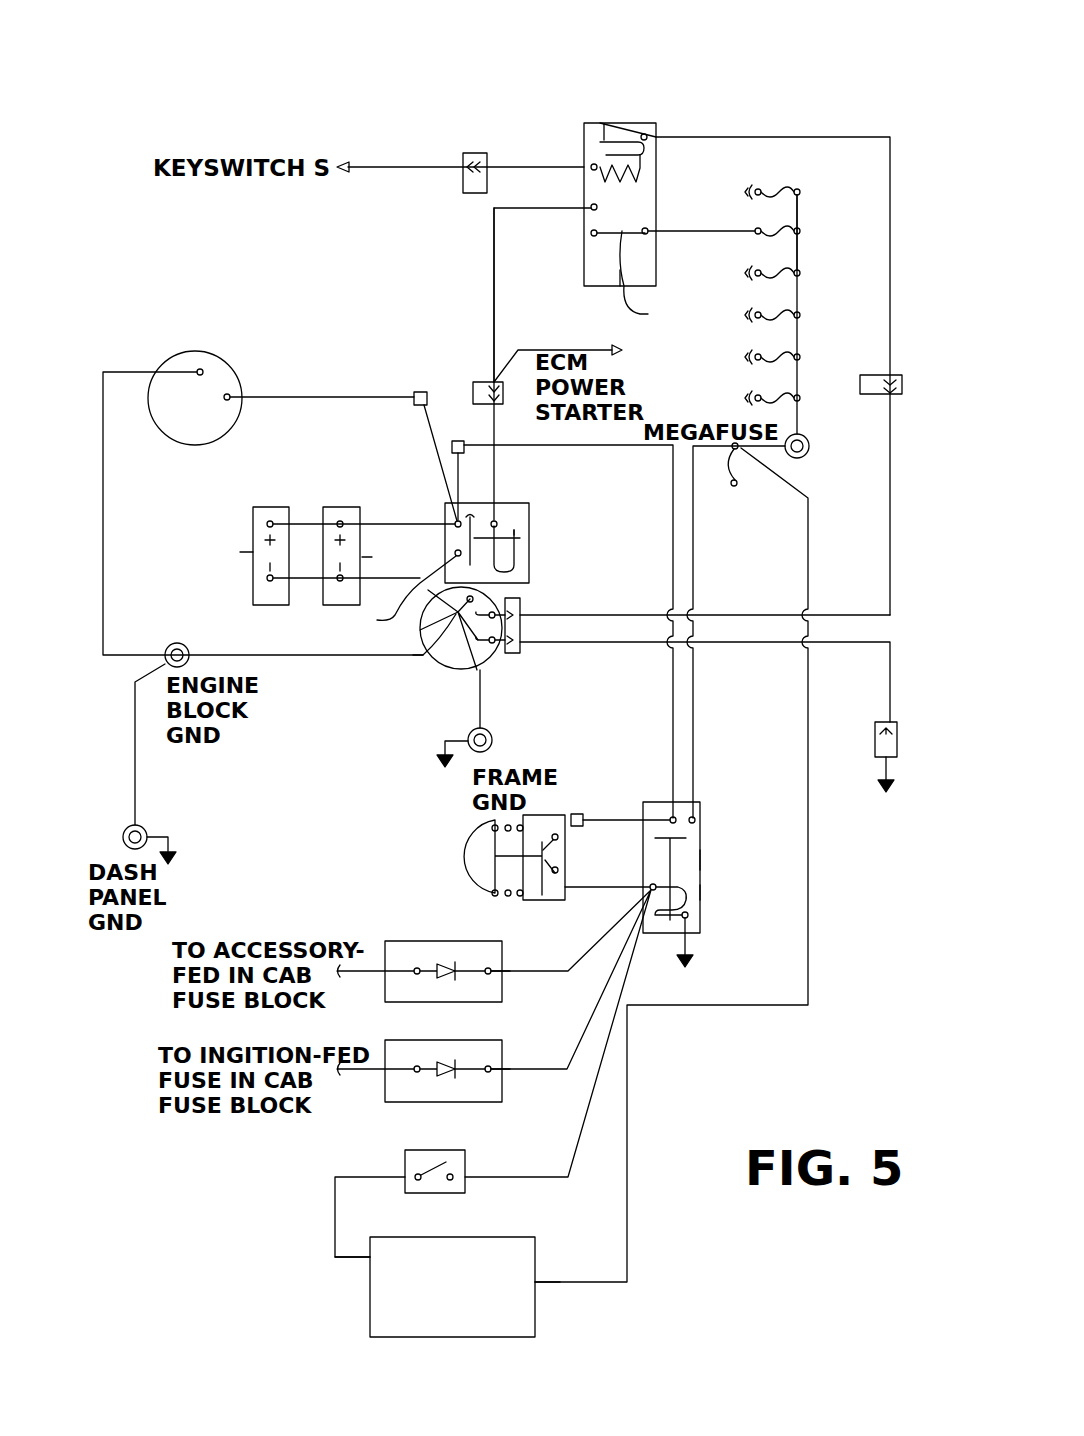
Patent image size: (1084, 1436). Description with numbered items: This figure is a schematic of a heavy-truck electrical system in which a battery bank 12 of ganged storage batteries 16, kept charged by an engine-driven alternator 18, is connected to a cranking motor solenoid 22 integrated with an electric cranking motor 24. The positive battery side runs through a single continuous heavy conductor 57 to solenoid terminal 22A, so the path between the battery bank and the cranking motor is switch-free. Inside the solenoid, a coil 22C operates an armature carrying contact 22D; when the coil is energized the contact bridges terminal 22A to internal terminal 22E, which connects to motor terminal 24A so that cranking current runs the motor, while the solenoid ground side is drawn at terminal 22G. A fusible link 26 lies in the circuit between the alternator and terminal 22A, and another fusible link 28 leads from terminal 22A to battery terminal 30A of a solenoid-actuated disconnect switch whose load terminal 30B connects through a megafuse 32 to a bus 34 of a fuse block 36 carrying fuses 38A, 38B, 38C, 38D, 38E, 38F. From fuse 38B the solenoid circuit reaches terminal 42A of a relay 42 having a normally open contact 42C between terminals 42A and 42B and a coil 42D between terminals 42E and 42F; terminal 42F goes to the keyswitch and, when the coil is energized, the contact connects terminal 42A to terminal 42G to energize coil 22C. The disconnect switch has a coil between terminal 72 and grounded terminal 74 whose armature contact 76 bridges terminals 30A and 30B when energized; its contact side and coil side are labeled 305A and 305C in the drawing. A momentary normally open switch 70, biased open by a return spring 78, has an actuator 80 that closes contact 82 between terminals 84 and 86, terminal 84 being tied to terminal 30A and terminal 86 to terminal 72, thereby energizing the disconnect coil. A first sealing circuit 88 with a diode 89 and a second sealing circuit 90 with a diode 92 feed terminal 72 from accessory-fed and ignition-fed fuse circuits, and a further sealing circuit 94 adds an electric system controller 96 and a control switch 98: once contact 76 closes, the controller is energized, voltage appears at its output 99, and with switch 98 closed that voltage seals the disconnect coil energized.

The relay 42 is at (703, 70).
The relay terminal 42A is at (648, 229).
The relay terminal 42B is at (594, 236).
The normally open contact 42C is at (661, 298).
The relay coil 42D is at (604, 124).
The relay coil terminal 42E is at (648, 136).
The relay coil terminal 42F is at (592, 165).
The relay terminal 42G is at (591, 207).
The fuse block 36 is at (764, 180).
The fuse 38A is at (801, 187).
The fuse 38B is at (801, 226).
The fuse 38C is at (804, 280).
The fuse 38D is at (804, 322).
The fuse 38E is at (801, 360).
The fuse 38F is at (801, 402).
The bus 34 is at (800, 270).
The megafuse 32 is at (738, 449).
The alternator 18 is at (195, 385).
The fusible link 26 is at (447, 503).
The fusible link 28 is at (445, 503).
The cranking motor solenoid 22 is at (552, 571).
The solenoid terminal 22A is at (455, 522).
The solenoid coil 22C is at (514, 528).
The solenoid contact 22D is at (428, 450).
The internal solenoid terminal 22E is at (392, 592).
The solenoid terminal 22G is at (423, 655).
The continuous heavy conductor 57 is at (453, 528).
The battery bank 12 is at (266, 542).
The storage batteries 16 is at (253, 552).
The cranking motor 24 is at (455, 668).
The motor terminal 24A is at (515, 598).
The actuator 80 is at (468, 857).
The switch terminal 84 is at (578, 814).
The switch terminal 86 is at (562, 875).
The switch contact 82 is at (537, 903).
The normally open switch 70 is at (500, 900).
The return spring 78 is at (510, 898).
The battery terminal 30A is at (655, 803).
The load terminal 30B is at (698, 803).
The contact 76 is at (703, 828).
The coil terminal 72 is at (649, 885).
The coil terminal 74 is at (705, 925).
The relay contact 305A is at (703, 860).
The relay contact 305C is at (703, 892).
The first sealing circuit 88 is at (382, 941).
The diode 89 is at (480, 1003).
The second sealing circuit 90 is at (405, 1040).
The diode 92 is at (470, 1102).
The control switch 98 is at (411, 1150).
The further sealing circuit 94 is at (357, 1282).
The controller output 99 is at (368, 1250).
The electric system controller 96 is at (537, 1302).